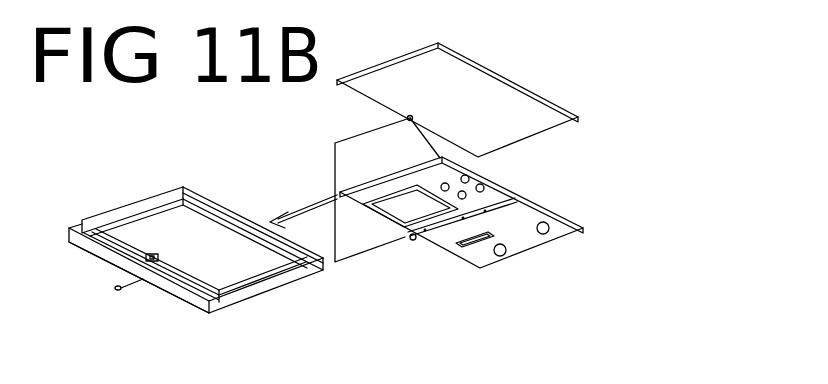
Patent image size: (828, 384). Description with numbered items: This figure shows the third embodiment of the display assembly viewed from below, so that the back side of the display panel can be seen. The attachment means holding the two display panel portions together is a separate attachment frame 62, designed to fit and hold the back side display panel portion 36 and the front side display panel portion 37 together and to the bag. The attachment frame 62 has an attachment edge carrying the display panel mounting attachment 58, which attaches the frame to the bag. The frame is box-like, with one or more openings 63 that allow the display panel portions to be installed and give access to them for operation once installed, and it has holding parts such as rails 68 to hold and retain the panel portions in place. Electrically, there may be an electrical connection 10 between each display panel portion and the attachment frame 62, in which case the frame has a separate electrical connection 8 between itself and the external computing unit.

The separate electrical connection 8 is at (133, 283).
The electrical connection 10 is at (412, 117).
The back side display panel portion 36 is at (535, 263).
The front side display panel portion 37 is at (535, 78).
The display panel mounting attachment 58 is at (183, 296).
The attachment frame 62 is at (118, 193).
The openings 63 is at (300, 257).
The rails 68 is at (233, 298).